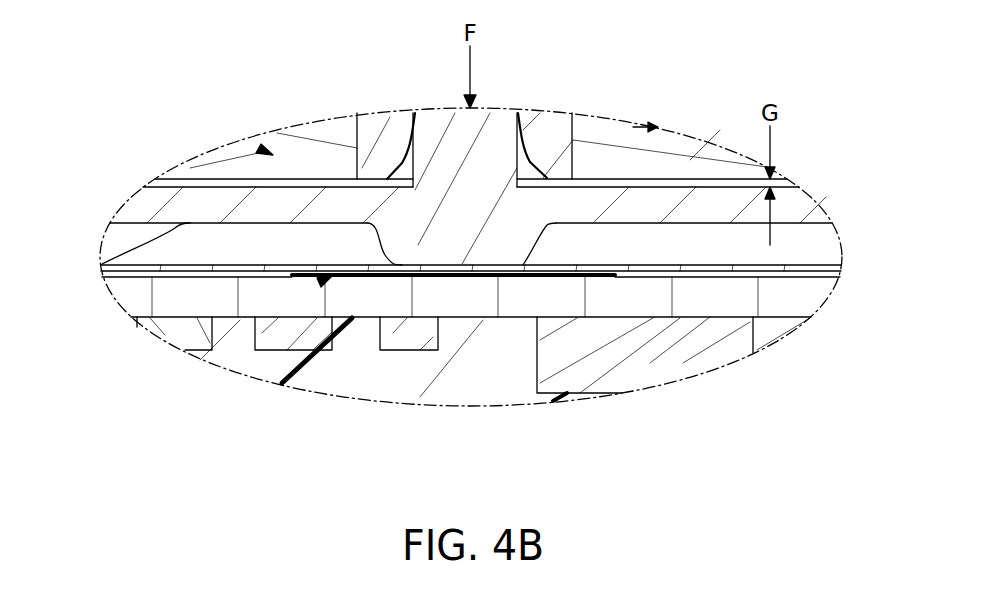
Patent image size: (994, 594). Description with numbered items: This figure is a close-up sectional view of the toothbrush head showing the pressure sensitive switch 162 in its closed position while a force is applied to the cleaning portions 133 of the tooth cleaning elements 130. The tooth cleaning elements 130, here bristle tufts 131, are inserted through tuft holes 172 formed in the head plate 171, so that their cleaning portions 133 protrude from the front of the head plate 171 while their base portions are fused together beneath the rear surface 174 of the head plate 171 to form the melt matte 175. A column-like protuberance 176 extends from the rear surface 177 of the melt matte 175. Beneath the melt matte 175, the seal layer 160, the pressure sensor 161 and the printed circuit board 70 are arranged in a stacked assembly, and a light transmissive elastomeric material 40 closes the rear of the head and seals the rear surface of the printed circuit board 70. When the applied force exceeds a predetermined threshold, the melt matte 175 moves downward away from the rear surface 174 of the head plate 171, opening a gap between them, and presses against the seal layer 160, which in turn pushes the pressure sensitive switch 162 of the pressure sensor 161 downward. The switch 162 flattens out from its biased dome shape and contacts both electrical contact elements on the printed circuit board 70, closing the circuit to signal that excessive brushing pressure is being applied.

The light transmissive elastomeric material 40 is at (343, 373).
The printed circuit board 70 is at (498, 297).
The tooth cleaning elements 130 is at (261, 151).
The bristle tufts 131 is at (500, 127).
The cleaning portion 133 is at (435, 133).
The seal layer 160 is at (823, 273).
The pressure sensor 161 is at (321, 278).
The pressure sensitive switch 162 is at (577, 277).
The head plate 171 is at (552, 140).
The tuft holes 172 is at (418, 139).
The rear surface of the head plate 174 is at (563, 178).
The melt matte 175 is at (648, 205).
The protuberance 176 is at (520, 240).
The rear surface of the melt matte 177 is at (102, 264).